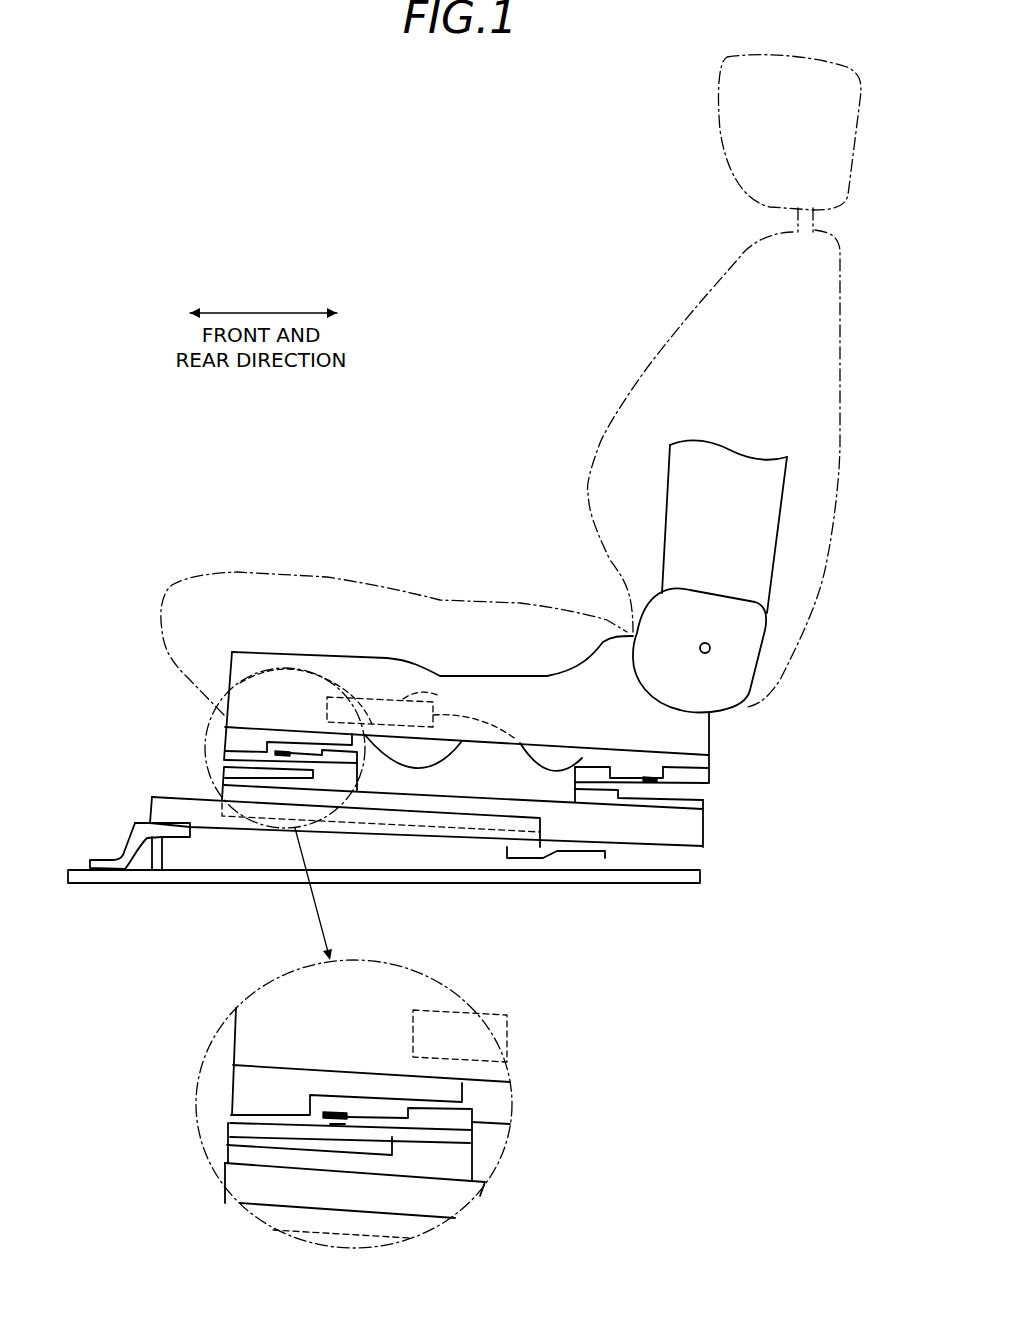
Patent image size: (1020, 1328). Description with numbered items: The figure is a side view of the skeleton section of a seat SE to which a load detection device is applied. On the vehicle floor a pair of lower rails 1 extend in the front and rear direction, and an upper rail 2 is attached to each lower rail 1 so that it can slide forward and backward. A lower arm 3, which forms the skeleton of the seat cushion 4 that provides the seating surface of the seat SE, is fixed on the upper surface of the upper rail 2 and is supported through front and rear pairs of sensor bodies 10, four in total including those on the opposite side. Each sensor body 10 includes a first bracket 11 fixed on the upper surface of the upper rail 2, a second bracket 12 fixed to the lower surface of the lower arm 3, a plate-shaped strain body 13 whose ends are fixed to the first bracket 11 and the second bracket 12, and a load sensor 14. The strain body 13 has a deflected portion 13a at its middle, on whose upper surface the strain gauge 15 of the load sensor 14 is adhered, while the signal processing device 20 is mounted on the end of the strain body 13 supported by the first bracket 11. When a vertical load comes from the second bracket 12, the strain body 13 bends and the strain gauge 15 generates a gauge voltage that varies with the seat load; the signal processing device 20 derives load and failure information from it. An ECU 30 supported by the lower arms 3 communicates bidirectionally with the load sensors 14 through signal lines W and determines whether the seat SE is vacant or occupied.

The seat SE is at (631, 352).
The lower rail 1 is at (158, 797).
The upper rail 2 is at (682, 838).
The lower arm 3 is at (347, 662).
The seat cushion 4 is at (240, 573).
The sensor body 10 is at (225, 733).
The first bracket 11 is at (312, 1164).
The second bracket 12 is at (272, 1080).
The strain body 13 is at (227, 1122).
The deflected portion 13a is at (336, 1128).
The load sensor 14 is at (240, 617).
The strain gauge 15 is at (283, 750).
The signal processing device 20 is at (328, 750).
The ECU 30 is at (378, 865).
The signal line W is at (423, 762).